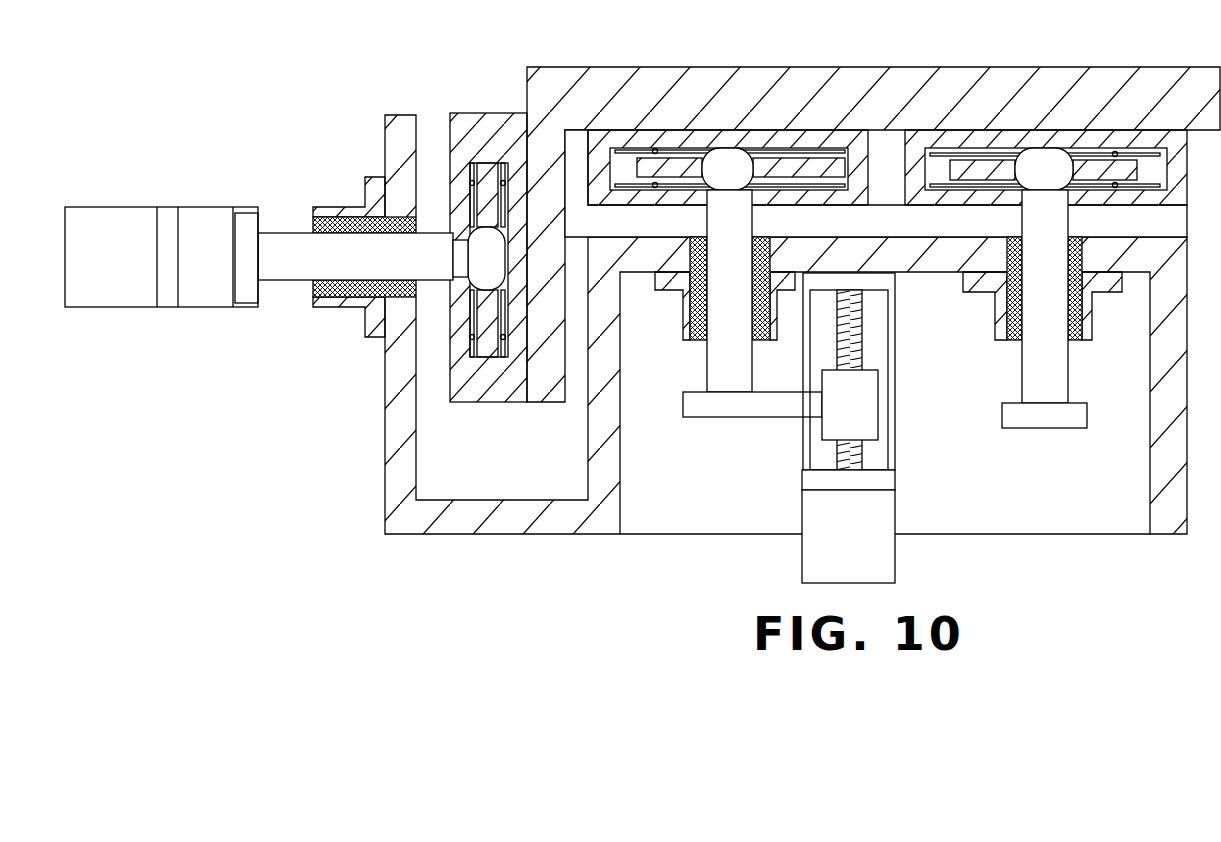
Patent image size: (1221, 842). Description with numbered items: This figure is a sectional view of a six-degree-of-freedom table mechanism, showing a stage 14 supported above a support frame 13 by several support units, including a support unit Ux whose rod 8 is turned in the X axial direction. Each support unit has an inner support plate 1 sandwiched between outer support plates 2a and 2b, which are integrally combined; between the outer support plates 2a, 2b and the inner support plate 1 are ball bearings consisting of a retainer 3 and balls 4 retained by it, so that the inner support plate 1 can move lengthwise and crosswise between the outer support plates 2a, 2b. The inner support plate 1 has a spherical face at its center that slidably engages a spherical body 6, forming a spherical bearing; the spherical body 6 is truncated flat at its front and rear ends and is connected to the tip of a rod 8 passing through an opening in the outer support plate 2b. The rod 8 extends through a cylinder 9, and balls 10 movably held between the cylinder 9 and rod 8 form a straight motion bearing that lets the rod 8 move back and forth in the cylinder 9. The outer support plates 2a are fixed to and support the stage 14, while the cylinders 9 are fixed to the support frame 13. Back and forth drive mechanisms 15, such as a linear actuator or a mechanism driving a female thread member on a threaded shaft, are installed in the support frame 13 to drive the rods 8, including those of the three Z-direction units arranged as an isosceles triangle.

The inner support plate 1 is at (487, 173).
The outer support plate 2a is at (800, 130).
The outer support plate 2b is at (845, 203).
The retainer 3 is at (630, 152).
The balls 4 is at (657, 150).
The spherical body 6 is at (735, 160).
The rod 8 is at (293, 245).
The cylinder 9 is at (350, 310).
The balls 10 is at (343, 220).
The support frame 13 is at (915, 273).
The stage 14 is at (916, 90).
The back and forth drive mechanism 15 is at (213, 290).
The support unit Ux is at (437, 210).